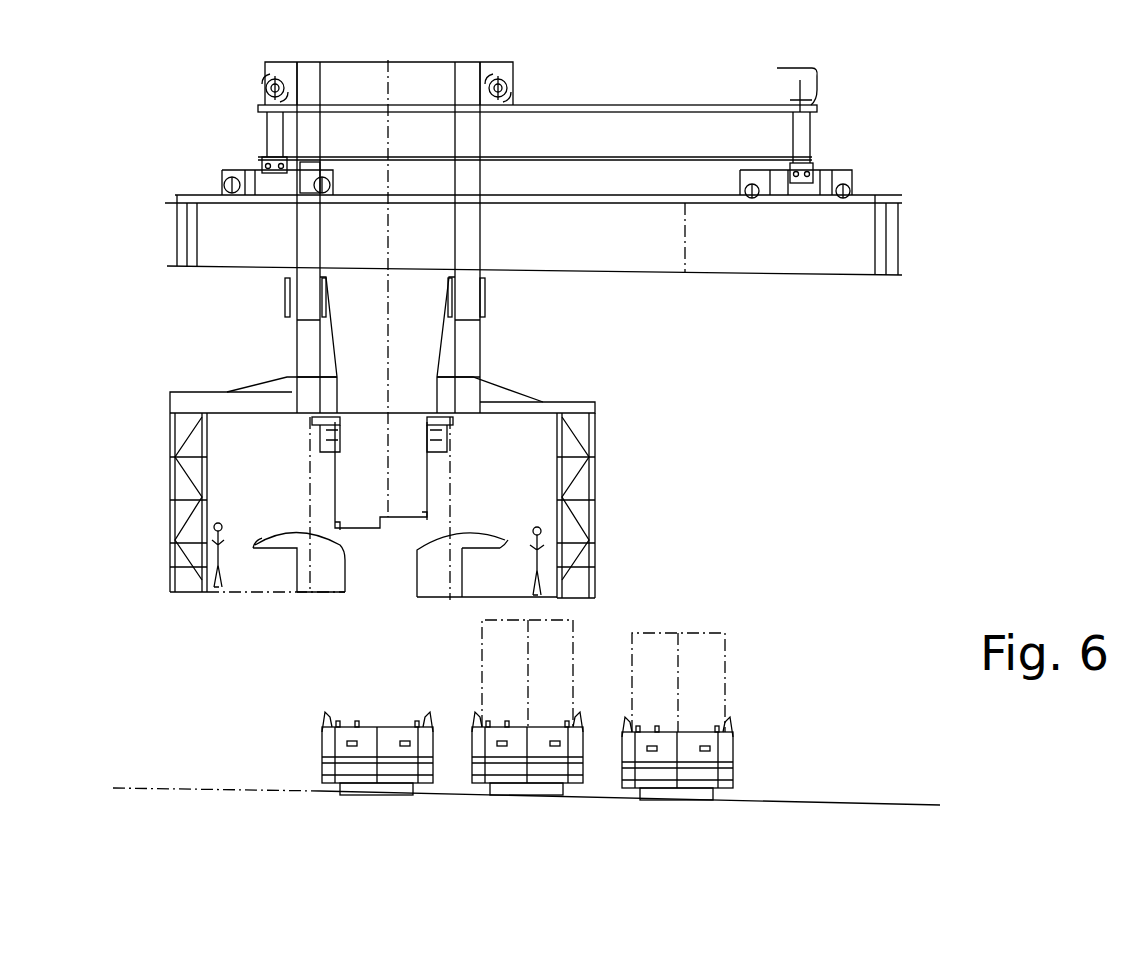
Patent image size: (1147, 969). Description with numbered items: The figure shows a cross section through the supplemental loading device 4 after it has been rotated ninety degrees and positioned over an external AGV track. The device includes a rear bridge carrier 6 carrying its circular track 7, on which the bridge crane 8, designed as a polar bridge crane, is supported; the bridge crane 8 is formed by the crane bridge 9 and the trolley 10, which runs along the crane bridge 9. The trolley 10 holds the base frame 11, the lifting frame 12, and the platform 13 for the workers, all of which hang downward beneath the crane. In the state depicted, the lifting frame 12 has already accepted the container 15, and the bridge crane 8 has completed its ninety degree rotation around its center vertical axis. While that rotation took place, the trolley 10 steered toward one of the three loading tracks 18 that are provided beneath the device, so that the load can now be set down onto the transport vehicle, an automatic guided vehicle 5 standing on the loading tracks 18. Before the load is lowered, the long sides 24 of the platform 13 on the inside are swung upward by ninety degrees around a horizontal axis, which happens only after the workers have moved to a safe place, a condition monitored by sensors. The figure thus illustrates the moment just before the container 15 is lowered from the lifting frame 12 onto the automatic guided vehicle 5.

The loading device 4 is at (759, 365).
The automatic guided vehicle 5 is at (327, 747).
The rear bridge carrier 6 is at (183, 237).
The circular track 7 is at (220, 194).
The bridge crane 8 is at (873, 158).
The crane bridge 9 is at (262, 133).
The trolley 10 is at (263, 63).
The base frame 11 is at (303, 338).
The lifting frame 12 is at (320, 438).
The platform 13 is at (200, 566).
The container 15 is at (357, 485).
The loading tracks 18 is at (375, 792).
The long sides 24 is at (425, 600).